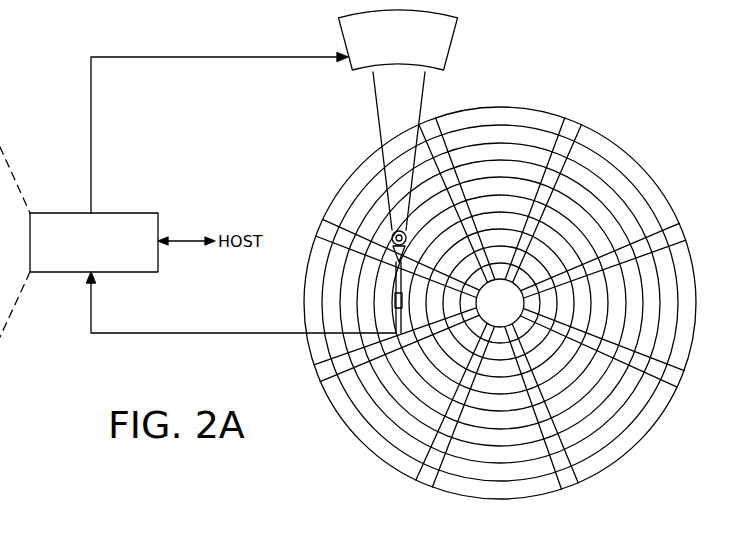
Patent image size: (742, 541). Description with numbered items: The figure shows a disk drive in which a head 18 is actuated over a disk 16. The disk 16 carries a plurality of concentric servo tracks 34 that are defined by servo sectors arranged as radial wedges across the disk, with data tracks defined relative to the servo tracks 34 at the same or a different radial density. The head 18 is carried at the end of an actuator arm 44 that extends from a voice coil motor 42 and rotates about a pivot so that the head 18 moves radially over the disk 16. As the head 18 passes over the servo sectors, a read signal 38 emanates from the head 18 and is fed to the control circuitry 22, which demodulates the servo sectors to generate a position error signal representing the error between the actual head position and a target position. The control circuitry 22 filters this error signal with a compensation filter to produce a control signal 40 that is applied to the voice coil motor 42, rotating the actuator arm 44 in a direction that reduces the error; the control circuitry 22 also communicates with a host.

The disk 16 is at (639, 146).
The head 18 is at (388, 309).
The control circuitry 22 is at (128, 213).
The servo tracks 34 is at (500, 133).
The read signal 38 is at (211, 332).
The control signal 40 is at (91, 125).
The voice coil motor 42 is at (349, 61).
The actuator arm 44 is at (380, 129).